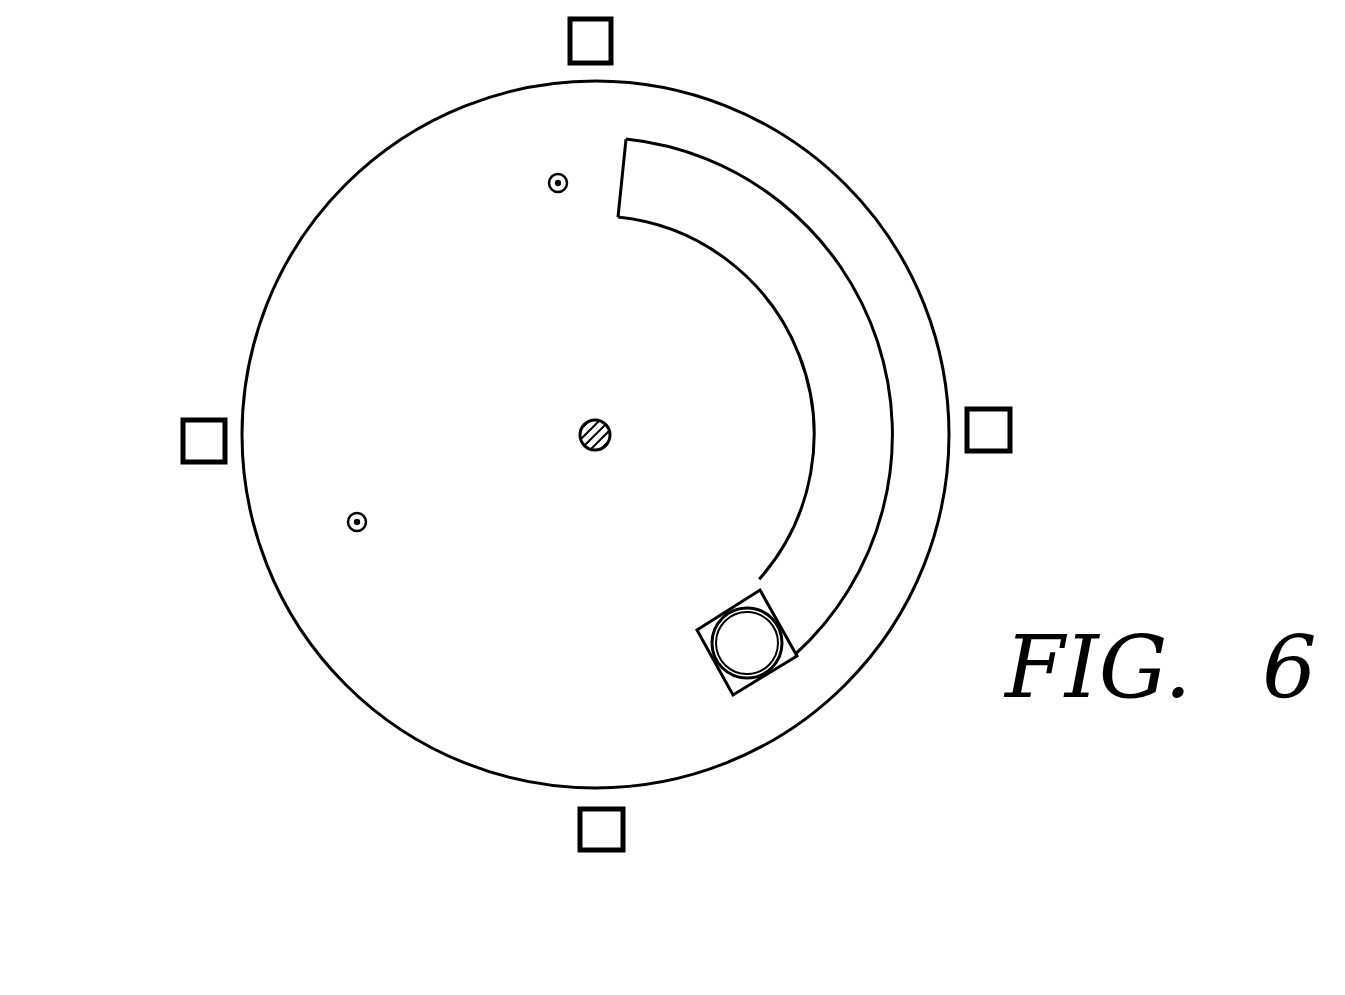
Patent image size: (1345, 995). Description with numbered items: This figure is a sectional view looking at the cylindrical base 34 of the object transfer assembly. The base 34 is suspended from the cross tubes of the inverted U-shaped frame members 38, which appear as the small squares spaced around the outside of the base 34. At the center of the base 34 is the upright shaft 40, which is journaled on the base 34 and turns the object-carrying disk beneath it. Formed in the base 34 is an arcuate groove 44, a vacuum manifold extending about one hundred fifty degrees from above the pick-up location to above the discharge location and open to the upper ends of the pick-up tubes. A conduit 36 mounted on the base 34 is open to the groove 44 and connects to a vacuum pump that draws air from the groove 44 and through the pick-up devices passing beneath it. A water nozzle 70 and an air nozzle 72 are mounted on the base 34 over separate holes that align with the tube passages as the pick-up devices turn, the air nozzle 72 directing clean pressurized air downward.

The cylindrical base 34 is at (898, 317).
The conduit 36 is at (748, 650).
The U-shaped frame members 38 is at (983, 430).
The upright shaft 40 is at (590, 453).
The arcuate groove 44 is at (778, 258).
The water nozzle 70 is at (550, 190).
The air nozzle 72 is at (363, 528).